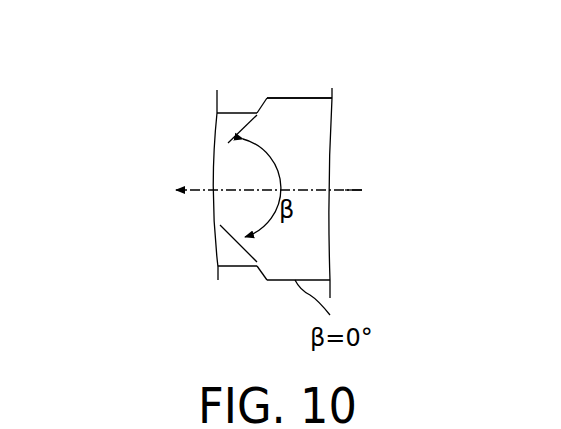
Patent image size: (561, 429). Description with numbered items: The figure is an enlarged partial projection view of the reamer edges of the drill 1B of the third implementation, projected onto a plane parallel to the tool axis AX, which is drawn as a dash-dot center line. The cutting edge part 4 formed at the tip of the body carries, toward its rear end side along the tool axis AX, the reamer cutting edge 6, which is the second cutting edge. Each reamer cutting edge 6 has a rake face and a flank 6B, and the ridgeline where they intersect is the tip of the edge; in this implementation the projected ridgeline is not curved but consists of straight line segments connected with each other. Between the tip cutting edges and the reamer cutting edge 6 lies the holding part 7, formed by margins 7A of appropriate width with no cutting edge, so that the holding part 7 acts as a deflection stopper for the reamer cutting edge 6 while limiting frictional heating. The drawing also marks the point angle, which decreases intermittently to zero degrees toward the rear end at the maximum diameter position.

The drill 1B is at (137, 135).
The cutting edge part 4 is at (205, 225).
The reamer cutting edge 6 is at (297, 98).
The flank 6B is at (313, 98).
The holding part 7 is at (232, 112).
The margin 7A is at (230, 267).
The tool axis AX is at (345, 188).